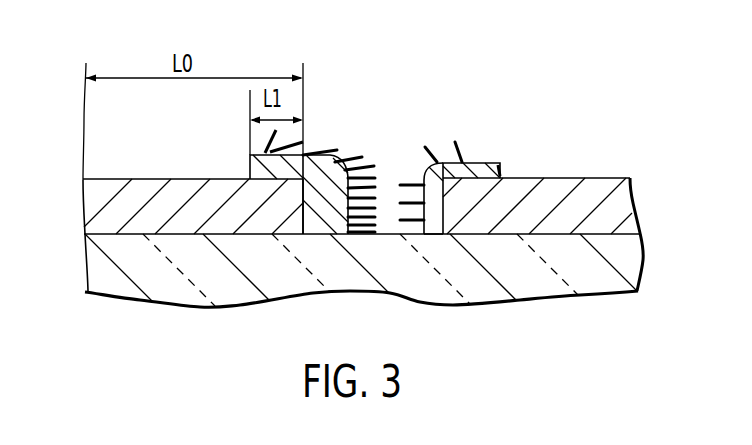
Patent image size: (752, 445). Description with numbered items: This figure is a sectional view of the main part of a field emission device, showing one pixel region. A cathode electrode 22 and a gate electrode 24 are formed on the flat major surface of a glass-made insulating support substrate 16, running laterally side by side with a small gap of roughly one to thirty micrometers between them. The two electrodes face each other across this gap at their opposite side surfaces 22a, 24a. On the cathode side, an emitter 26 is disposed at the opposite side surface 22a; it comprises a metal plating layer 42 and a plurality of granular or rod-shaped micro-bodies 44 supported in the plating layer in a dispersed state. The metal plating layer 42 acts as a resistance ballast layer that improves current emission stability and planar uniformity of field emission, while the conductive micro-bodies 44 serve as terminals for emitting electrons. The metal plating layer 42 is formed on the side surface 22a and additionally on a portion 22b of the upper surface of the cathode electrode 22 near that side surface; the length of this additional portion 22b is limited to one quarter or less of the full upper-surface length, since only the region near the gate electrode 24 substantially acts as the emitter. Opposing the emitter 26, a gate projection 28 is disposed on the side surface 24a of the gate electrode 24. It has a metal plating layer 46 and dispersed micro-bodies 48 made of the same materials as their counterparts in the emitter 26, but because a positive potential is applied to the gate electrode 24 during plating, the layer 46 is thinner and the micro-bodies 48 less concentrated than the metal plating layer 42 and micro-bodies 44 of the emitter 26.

The support substrate 16 is at (623, 262).
The cathode electrode 22 is at (153, 188).
The opposite side surface of the cathode electrode 22a is at (303, 217).
The portion of the upper surface of the cathode electrode 22b is at (272, 181).
The gate electrode 24 is at (623, 203).
The opposite side surface of the gate electrode 24a is at (440, 222).
The emitter 26 is at (322, 136).
The gate projection 28 is at (455, 146).
The metal plating layer 42 is at (256, 168).
The micro-bodies 44 is at (356, 158).
The metal plating layer 46 is at (456, 122).
The micro-bodies 48 is at (435, 146).